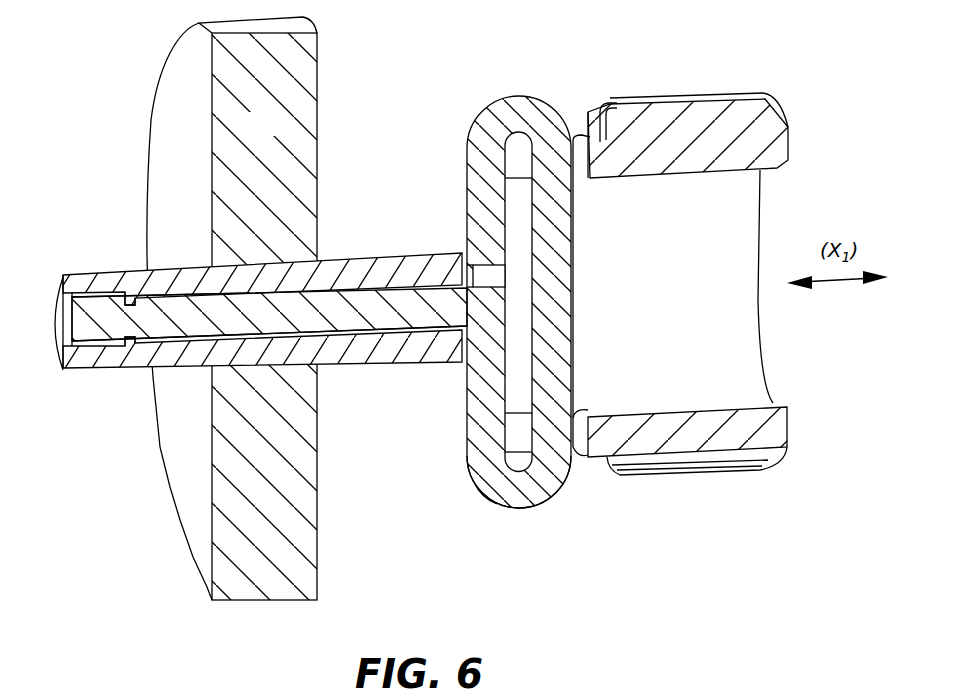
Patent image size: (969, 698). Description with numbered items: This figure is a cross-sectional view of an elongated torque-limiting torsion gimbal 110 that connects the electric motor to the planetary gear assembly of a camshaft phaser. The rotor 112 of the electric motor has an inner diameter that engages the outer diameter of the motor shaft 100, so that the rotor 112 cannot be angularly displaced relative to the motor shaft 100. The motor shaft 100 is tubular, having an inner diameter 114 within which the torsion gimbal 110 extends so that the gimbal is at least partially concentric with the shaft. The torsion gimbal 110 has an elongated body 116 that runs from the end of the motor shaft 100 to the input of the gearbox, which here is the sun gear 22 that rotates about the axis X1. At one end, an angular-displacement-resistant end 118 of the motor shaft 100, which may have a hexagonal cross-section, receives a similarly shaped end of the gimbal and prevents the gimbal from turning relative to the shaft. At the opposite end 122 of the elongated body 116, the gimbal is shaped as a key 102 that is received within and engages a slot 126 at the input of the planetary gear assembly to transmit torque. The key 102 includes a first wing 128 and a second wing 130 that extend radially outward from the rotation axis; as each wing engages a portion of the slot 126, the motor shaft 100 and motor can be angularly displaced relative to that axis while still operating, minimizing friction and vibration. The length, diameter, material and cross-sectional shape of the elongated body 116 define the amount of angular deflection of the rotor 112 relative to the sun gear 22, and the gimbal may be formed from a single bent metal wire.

The sun gear 22 is at (682, 299).
The motor shaft 100 is at (386, 252).
The key 102 is at (496, 522).
The torsion gimbal 110 is at (402, 310).
The rotor 112 is at (285, 140).
The inner diameter 114 is at (155, 290).
The elongated body 116 is at (260, 323).
The angular-displacement-resistant end 118 is at (92, 345).
The opposite end 122 is at (470, 305).
The slot 126 is at (580, 157).
The first wing 128 is at (515, 95).
The second wing 130 is at (528, 508).